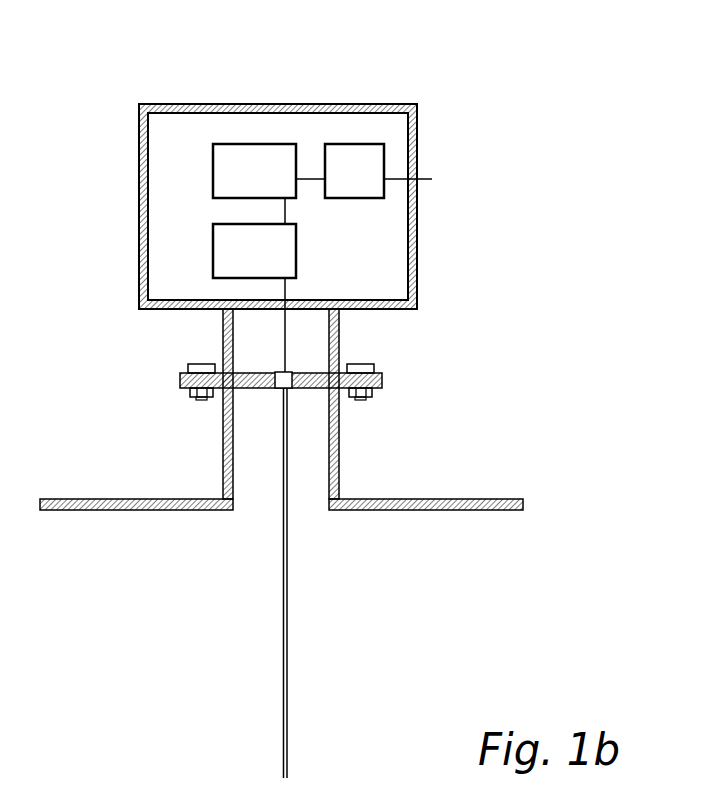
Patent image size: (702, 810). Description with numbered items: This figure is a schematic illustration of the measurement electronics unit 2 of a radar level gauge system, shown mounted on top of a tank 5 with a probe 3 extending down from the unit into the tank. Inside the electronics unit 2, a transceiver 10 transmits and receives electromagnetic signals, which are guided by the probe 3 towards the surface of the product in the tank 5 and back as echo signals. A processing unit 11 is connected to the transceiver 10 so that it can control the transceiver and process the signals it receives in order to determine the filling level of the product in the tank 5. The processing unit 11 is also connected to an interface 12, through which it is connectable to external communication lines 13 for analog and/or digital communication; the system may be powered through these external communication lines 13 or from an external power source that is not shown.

The measurement electronics unit 2 is at (198, 104).
The probe 3 is at (289, 618).
The tank 5 is at (455, 499).
The transceiver 10 is at (296, 249).
The processing unit 11 is at (213, 174).
The interface 12 is at (357, 144).
The external communication lines 13 is at (432, 180).